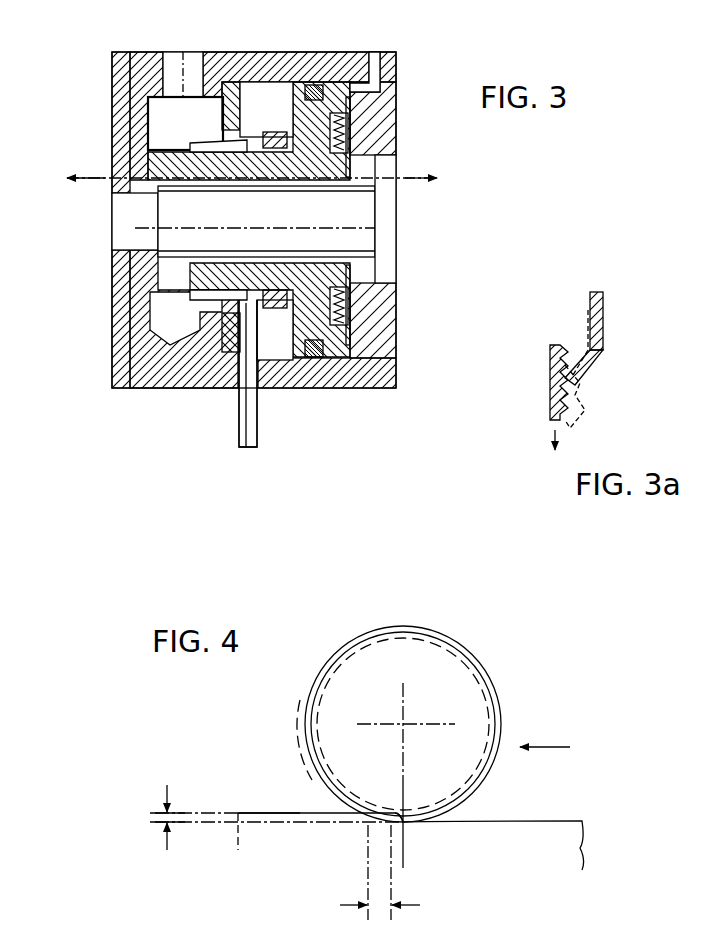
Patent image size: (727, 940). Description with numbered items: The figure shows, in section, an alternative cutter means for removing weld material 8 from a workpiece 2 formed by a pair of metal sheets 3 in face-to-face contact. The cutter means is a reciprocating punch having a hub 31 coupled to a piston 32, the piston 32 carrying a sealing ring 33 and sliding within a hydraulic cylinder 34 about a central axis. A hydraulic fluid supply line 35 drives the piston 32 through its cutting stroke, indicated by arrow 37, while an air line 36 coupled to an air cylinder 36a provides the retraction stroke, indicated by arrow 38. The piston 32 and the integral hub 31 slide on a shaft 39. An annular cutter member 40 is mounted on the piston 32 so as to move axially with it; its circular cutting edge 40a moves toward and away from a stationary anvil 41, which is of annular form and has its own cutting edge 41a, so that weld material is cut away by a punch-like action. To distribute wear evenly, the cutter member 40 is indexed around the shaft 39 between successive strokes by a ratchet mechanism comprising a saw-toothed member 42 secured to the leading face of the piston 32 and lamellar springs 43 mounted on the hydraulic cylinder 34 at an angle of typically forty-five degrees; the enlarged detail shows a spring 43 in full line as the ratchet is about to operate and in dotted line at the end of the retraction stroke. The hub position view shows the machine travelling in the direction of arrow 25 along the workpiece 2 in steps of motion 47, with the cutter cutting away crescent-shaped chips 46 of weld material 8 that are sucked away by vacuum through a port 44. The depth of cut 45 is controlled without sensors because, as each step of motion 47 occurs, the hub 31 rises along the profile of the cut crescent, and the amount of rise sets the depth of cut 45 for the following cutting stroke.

In FIG. 3, the workpiece 2 is at (258, 432).
In FIG. 4, the workpiece 2 is at (565, 817).
In FIG. 3, the metal sheets 3 is at (252, 408).
In FIG. 4, the weld material 8 is at (285, 822).
In FIG. 4, the direction of travel arrow 25 is at (553, 746).
In FIG. 3, the hub 31 is at (250, 127).
In FIG. 4, the hub 31 is at (378, 642).
In FIG. 3, the piston 32 is at (333, 100).
In FIG. 3, the sealing ring 33 is at (312, 85).
In FIG. 3, the hydraulic cylinder 34 is at (380, 130).
In FIG. 3, the hydraulic fluid supply line 35 is at (370, 77).
In FIG. 3, the air line 36 is at (148, 138).
In FIG. 3, the air cylinder 36a is at (150, 298).
In FIG. 3, the cutting stroke arrow 37 is at (86, 175).
In FIG. 3, the retraction stroke arrow 38 is at (416, 174).
In FIG. 3, the shaft 39 is at (357, 212).
In FIG. 3, the annular cutter member 40 is at (275, 138).
In FIG. 4, the annular cutter member 40 is at (485, 668).
In FIG. 3, the circular cutting edge 40a is at (263, 320).
In FIG. 3, the anvil 41 is at (227, 100).
In FIG. 3, the anvil cutting edge 41a is at (232, 298).
In FIG. 3, the saw-toothed member 42 is at (330, 120).
In FIG. 3A, the saw-toothed member 42 is at (550, 404).
In FIG. 3, the lamellar springs 43 is at (350, 146).
In FIG. 3A, the lamellar springs 43 is at (596, 328).
In FIG. 3, the port 44 is at (183, 72).
In FIG. 4, the depth of cut 45 is at (160, 820).
In FIG. 4, the crescent-shaped chips 46 is at (403, 826).
In FIG. 4, the step of motion 47 is at (380, 903).